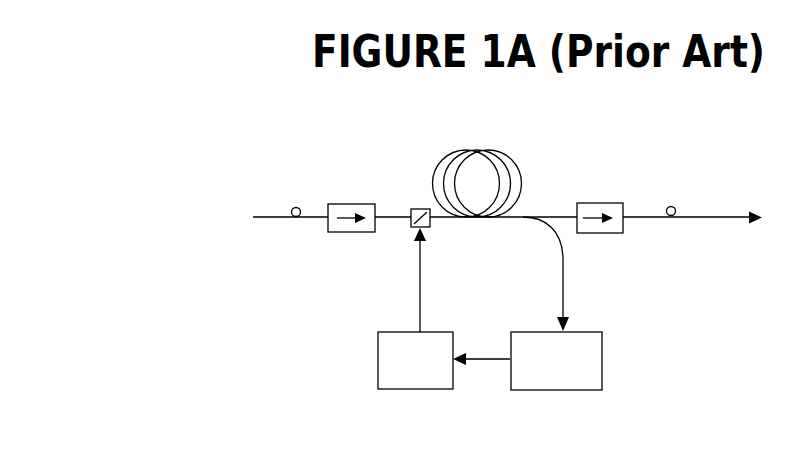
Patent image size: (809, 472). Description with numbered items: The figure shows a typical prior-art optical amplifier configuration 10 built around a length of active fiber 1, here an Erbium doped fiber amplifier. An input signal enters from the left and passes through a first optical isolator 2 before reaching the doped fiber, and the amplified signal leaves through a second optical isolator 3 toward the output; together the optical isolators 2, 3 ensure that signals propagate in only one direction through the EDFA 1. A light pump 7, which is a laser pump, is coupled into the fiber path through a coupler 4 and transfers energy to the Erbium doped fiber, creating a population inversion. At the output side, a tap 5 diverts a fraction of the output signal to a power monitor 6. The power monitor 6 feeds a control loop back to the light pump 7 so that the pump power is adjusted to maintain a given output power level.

The active fiber 1 is at (522, 183).
The optical isolator 2 is at (345, 232).
The optical isolator 3 is at (613, 203).
The pump coupler 4 is at (407, 209).
The tap 5 is at (523, 220).
The power monitor 6 is at (602, 352).
The light pump 7 is at (440, 390).
The optical amplifier configuration 10 is at (348, 323).